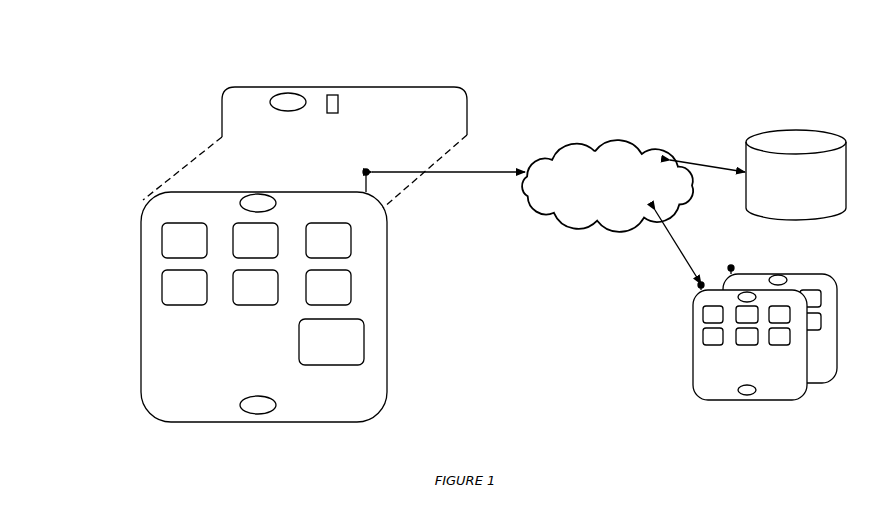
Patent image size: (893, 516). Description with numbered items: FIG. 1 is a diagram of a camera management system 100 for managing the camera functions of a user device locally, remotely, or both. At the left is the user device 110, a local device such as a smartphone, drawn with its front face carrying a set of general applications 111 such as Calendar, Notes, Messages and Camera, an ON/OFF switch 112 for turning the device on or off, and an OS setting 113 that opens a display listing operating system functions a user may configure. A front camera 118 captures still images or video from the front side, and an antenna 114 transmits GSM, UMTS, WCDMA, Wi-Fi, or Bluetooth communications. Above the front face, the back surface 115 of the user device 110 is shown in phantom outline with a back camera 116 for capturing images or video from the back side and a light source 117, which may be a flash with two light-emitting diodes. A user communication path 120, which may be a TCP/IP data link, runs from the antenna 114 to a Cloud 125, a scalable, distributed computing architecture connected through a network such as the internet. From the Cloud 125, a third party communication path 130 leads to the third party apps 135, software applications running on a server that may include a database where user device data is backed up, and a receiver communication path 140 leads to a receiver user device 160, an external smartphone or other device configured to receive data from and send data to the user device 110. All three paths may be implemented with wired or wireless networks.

The camera management system 100 is at (787, 74).
The user device 110 is at (388, 297).
The general applications 111 is at (130, 310).
The ON/OFF switch 112 is at (233, 399).
The OS setting 113 is at (331, 342).
The antenna 114 is at (360, 170).
The back surface 115 is at (218, 108).
The back camera 116 is at (283, 92).
The light source 117 is at (338, 99).
The front camera 118 is at (210, 203).
The user communication path 120 is at (470, 172).
The Cloud 125 is at (607, 186).
The third party communication path 130 is at (710, 165).
The third party apps database 135 is at (796, 175).
The receiver communication path 140 is at (685, 258).
The receiver user device 160 is at (692, 363).